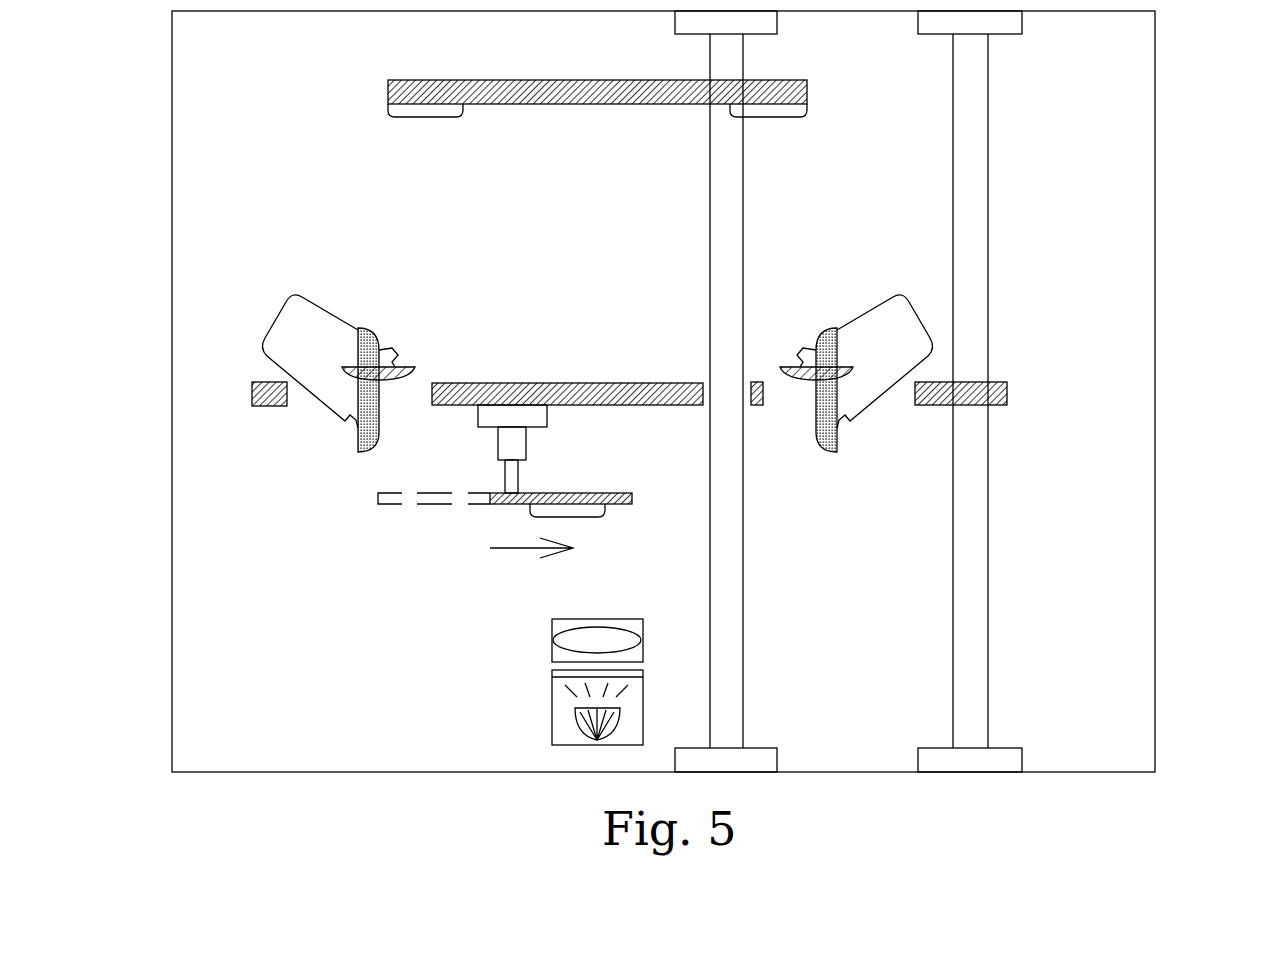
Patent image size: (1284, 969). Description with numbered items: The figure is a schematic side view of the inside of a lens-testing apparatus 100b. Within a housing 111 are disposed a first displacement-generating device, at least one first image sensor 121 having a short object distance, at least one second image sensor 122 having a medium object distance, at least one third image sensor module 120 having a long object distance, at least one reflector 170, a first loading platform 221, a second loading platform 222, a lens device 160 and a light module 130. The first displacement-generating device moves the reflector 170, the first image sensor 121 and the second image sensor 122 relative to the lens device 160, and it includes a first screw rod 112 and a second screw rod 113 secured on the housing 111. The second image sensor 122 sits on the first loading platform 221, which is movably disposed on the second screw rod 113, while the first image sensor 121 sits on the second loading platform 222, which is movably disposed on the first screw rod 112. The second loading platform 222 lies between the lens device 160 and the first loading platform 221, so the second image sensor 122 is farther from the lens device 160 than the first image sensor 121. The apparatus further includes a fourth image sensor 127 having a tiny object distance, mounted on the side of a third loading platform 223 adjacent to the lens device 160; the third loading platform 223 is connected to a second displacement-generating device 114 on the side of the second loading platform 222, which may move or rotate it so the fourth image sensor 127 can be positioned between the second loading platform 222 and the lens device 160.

The lens-testing apparatus 100b is at (728, 391).
The housing 111 is at (1155, 375).
The first screw rod 112 is at (988, 560).
The second screw rod 113 is at (743, 558).
The second displacement-generating device 114 is at (510, 437).
The third image sensor module 120 is at (300, 312).
The first image sensor 121 is at (413, 368).
The second image sensor 122 is at (393, 110).
The fourth image sensor 127 is at (575, 513).
The light module 130 is at (527, 715).
The lens device 160 is at (552, 645).
The reflector 170 is at (360, 440).
The first loading platform 221 is at (809, 90).
The second loading platform 222 is at (1007, 393).
The third loading platform 223 is at (632, 490).